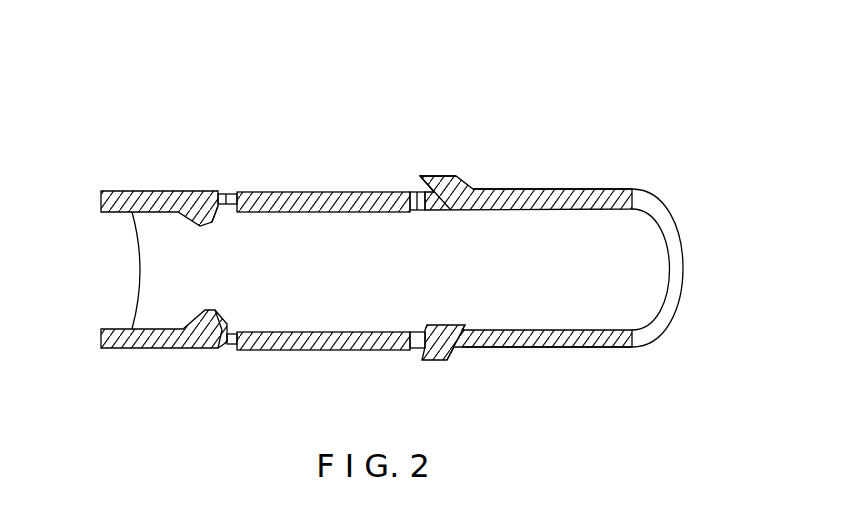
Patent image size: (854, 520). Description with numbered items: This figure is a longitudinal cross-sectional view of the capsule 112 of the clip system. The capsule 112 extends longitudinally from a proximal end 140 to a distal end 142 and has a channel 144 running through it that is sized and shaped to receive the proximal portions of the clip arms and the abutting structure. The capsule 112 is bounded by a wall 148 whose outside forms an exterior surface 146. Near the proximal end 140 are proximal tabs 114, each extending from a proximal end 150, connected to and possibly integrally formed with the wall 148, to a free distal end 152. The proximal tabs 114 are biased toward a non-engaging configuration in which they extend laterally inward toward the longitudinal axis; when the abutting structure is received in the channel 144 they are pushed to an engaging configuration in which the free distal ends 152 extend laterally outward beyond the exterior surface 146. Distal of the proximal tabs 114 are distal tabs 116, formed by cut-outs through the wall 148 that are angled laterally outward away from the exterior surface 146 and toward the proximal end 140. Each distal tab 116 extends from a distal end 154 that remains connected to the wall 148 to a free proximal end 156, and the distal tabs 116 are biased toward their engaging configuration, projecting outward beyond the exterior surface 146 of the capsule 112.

The capsule 112 is at (295, 122).
The proximal tabs 114 is at (188, 224).
The distal tabs 116 is at (435, 200).
The proximal end 140 is at (105, 190).
The distal end 142 is at (622, 189).
The channel 144 is at (647, 272).
The exterior surface 146 is at (535, 189).
The wall 148 is at (543, 349).
The proximal end 150 is at (165, 193).
The free distal end 152 is at (205, 193).
The distal end 154 is at (467, 187).
The free proximal end 156 is at (423, 179).